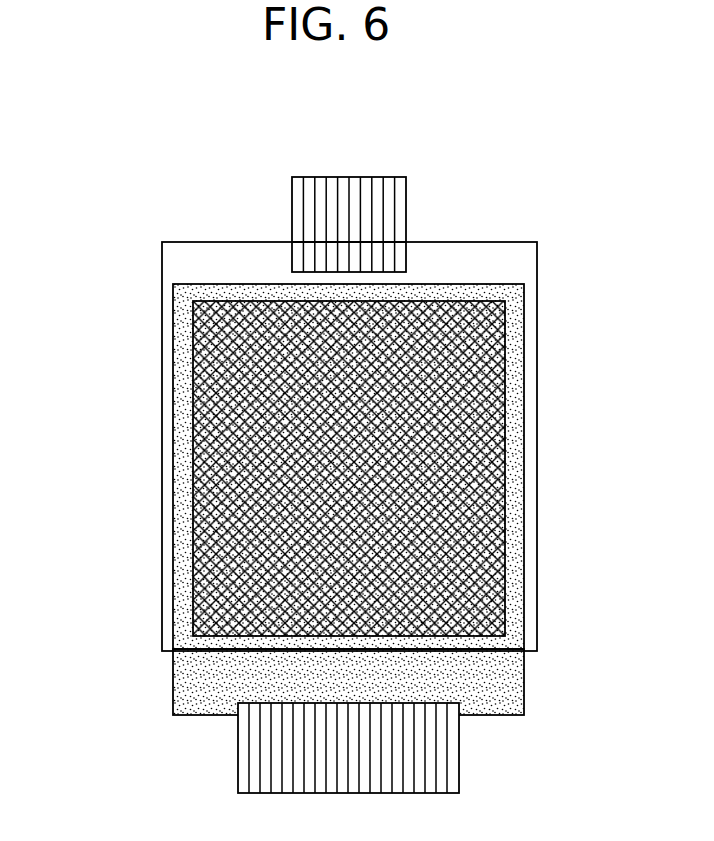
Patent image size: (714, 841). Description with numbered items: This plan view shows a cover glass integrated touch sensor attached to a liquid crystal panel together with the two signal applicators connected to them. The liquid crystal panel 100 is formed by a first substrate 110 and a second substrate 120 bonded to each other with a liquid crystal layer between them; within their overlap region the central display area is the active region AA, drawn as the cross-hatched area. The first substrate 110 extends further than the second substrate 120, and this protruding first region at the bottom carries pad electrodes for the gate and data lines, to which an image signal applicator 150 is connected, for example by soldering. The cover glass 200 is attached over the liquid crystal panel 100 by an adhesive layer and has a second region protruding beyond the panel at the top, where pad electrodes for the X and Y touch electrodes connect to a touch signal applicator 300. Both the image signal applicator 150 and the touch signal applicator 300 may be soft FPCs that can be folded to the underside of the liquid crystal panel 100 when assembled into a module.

The liquid crystal panel 100 is at (296, 499).
The first substrate 110 is at (177, 659).
The second substrate 120 is at (197, 647).
The image signal applicator 150 is at (449, 768).
The cover glass 200 is at (171, 265).
The touch signal applicator 300 is at (355, 193).
The active region AA is at (505, 572).